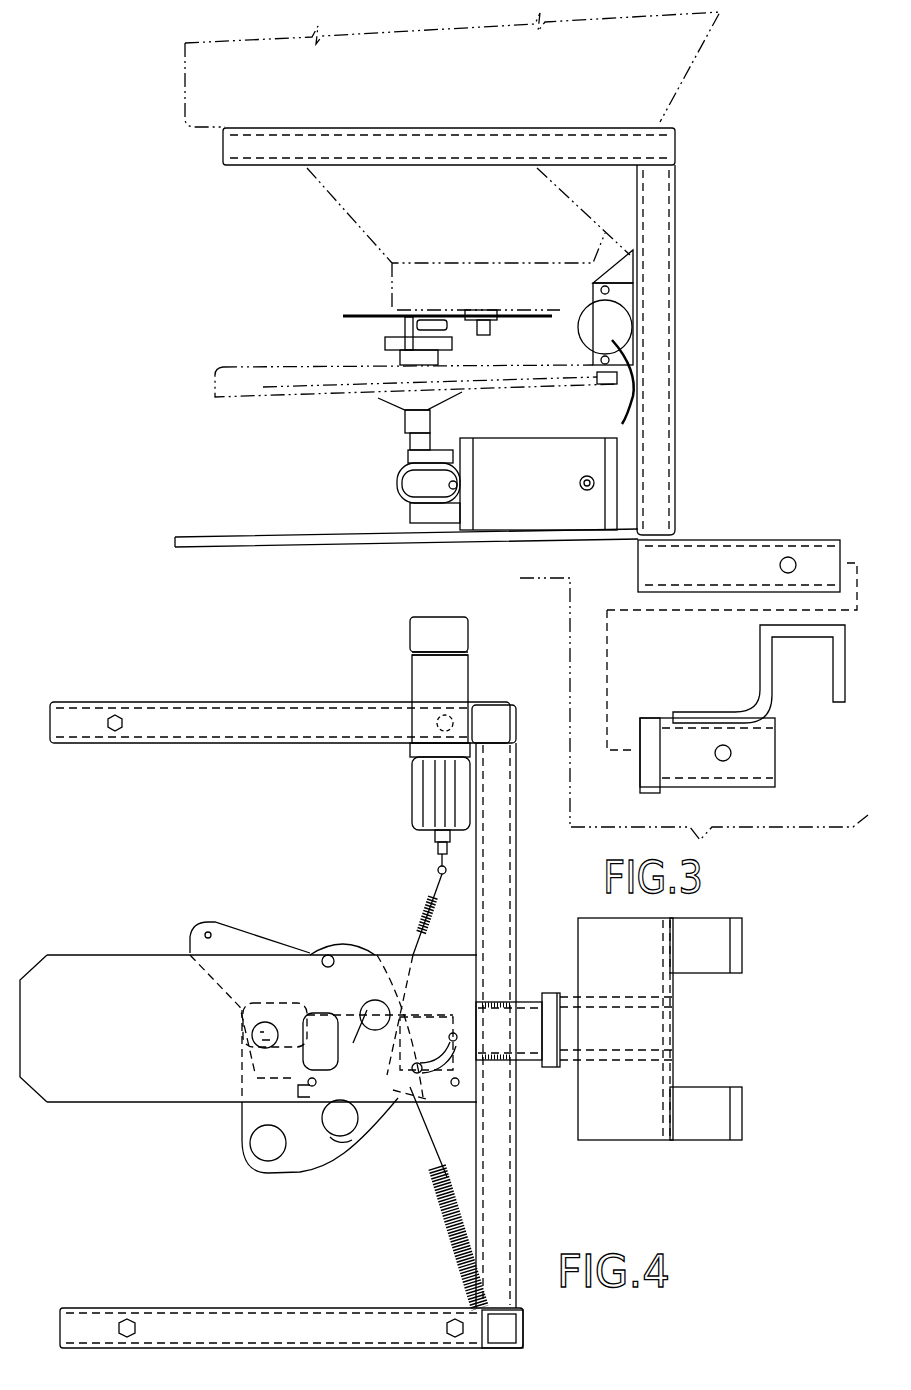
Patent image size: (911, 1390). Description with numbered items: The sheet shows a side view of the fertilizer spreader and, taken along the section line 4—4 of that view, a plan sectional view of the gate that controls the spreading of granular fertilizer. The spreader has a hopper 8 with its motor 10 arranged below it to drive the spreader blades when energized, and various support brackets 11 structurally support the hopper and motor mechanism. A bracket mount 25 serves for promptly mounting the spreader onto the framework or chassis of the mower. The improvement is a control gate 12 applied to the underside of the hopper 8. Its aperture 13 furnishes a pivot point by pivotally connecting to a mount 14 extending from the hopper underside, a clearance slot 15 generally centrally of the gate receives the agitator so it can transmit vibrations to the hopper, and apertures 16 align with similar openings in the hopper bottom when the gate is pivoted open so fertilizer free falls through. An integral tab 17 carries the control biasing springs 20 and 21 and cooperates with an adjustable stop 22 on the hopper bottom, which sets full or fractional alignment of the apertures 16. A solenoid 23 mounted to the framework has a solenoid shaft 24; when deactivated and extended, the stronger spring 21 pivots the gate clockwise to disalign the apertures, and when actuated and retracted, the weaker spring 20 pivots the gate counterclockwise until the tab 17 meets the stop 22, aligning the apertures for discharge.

In FIG. 3, the hopper 8 is at (712, 57).
In FIG. 3, the motor 10 is at (515, 495).
In FIG. 3, the support brackets 11 is at (240, 168).
In FIG. 4, the support brackets 11 is at (168, 703).
In FIG. 3, the control gate 12 is at (356, 318).
In FIG. 4, the control gate 12 is at (241, 1143).
In FIG. 4, the aperture 13 is at (333, 1055).
In FIG. 3, the mount 14 is at (487, 312).
In FIG. 4, the mount 14 is at (254, 1033).
In FIG. 4, the clearance slot 15 is at (317, 1017).
In FIG. 4, the apertures 16 is at (340, 1137).
In FIG. 4, the integral tab 17 is at (457, 1053).
In FIG. 4, the control biasing spring 20 is at (428, 913).
In FIG. 4, the control biasing spring 21 is at (443, 1222).
In FIG. 4, the stop 22 is at (449, 1039).
In FIG. 4, the solenoid 23 is at (454, 682).
In FIG. 4, the solenoid shaft 24 is at (433, 847).
In FIG. 3, the bracket mount 25 is at (735, 696).
In FIG. 4, the bracket mount 25 is at (660, 1150).
In FIG. 3, the section line 4- 4 is at (830, 834).